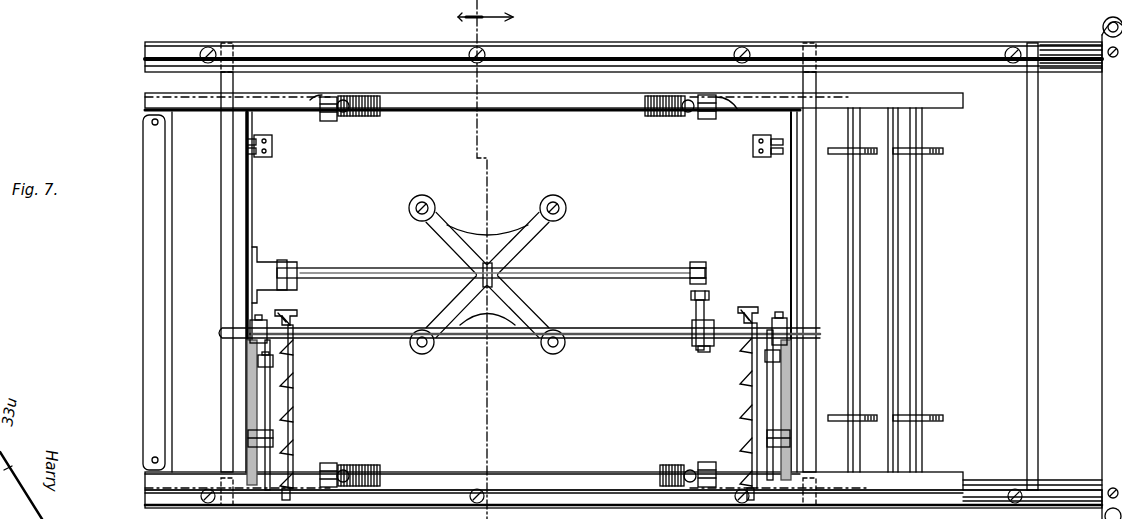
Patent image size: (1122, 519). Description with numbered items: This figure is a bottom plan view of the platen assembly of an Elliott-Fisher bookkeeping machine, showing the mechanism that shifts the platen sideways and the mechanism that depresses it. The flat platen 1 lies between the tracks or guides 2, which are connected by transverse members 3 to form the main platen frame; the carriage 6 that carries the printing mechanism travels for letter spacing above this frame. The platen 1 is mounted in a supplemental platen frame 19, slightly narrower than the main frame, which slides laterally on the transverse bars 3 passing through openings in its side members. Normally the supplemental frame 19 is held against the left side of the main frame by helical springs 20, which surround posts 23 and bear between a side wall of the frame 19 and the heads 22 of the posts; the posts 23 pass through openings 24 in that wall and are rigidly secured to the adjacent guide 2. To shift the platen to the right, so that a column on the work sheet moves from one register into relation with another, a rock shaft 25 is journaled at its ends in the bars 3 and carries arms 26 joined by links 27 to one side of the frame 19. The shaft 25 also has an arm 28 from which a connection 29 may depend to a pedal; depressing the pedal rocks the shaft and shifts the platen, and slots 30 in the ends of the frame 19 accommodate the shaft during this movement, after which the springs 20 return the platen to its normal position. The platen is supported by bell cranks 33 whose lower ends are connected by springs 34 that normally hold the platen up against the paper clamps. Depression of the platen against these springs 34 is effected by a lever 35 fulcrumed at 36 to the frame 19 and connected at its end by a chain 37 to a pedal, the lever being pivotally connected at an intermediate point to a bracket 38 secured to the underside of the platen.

The platen 1 is at (445, 165).
The tracks or guides 2 is at (549, 54).
The transverse members 3 is at (233, 90).
The carriage 6 is at (485, 10).
The supplemental platen frame 19 is at (580, 100).
The springs 20 is at (294, 405).
The heads 22 is at (298, 312).
The posts 23 is at (294, 378).
The openings 24 is at (290, 487).
The rock shaft 25 is at (604, 328).
The arms 26 is at (258, 356).
The links 27 is at (262, 398).
The arm 28 is at (696, 314).
The connection 29 is at (691, 296).
The slots 30 is at (250, 327).
The bell cranks 33 is at (329, 121).
The springs 34 is at (660, 117).
The lever 35 is at (598, 268).
The fulcrum 36 is at (297, 262).
The chain 37 is at (699, 262).
The bracket 38 is at (518, 242).